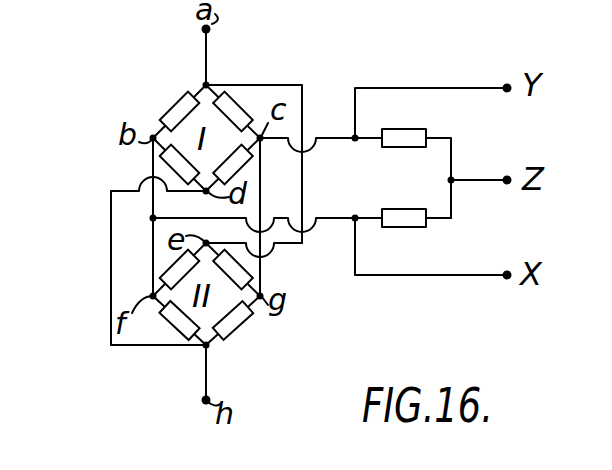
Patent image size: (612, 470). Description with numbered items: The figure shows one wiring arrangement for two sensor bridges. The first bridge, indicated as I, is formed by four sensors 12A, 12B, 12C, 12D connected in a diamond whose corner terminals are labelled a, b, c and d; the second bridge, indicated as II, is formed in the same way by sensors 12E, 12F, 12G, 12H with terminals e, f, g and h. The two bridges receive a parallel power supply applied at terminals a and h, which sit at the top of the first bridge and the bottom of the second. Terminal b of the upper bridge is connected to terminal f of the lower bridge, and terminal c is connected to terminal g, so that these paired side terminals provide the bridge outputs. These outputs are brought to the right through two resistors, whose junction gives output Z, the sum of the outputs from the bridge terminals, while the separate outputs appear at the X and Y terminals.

The sensor 12A is at (170, 111).
The sensor 12B is at (233, 107).
The sensor 12C is at (168, 164).
The sensor 12D is at (245, 158).
The sensor 12E is at (177, 266).
The sensor 12F is at (240, 266).
The sensor 12G is at (183, 322).
The sensor 12H is at (233, 325).